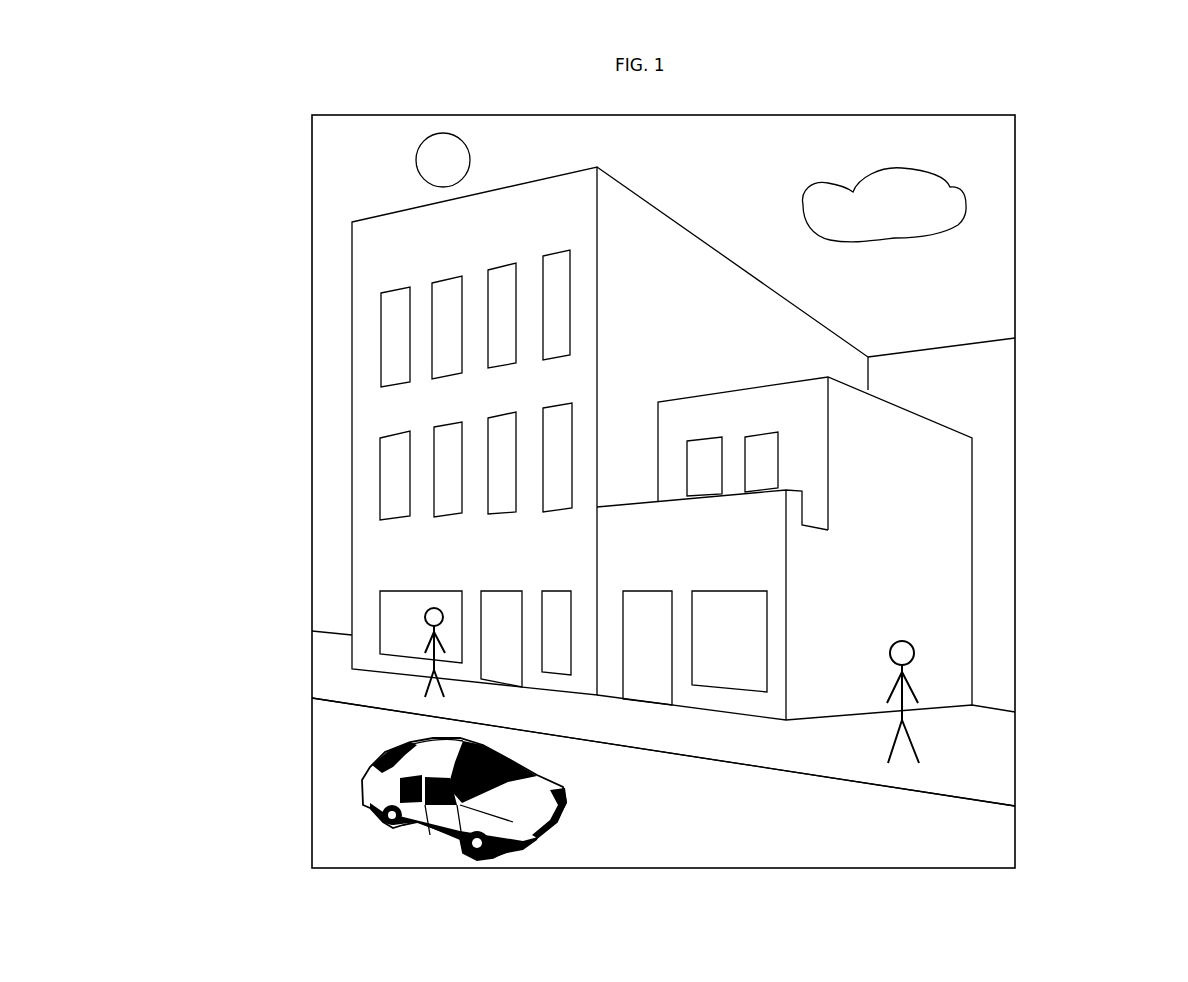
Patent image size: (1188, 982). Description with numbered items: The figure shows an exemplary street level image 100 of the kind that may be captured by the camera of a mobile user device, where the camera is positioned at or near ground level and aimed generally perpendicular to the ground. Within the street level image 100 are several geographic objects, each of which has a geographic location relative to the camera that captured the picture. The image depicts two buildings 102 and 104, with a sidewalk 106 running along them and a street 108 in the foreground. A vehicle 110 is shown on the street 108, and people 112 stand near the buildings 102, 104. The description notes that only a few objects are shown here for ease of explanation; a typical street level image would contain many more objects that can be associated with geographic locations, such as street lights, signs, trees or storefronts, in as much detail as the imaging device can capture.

The street level image 100 is at (740, 106).
The building 102 is at (358, 377).
The building 104 is at (928, 557).
The sidewalk 106 is at (335, 660).
The street 108 is at (932, 815).
The vehicle 110 is at (367, 773).
The people 112 is at (390, 619).